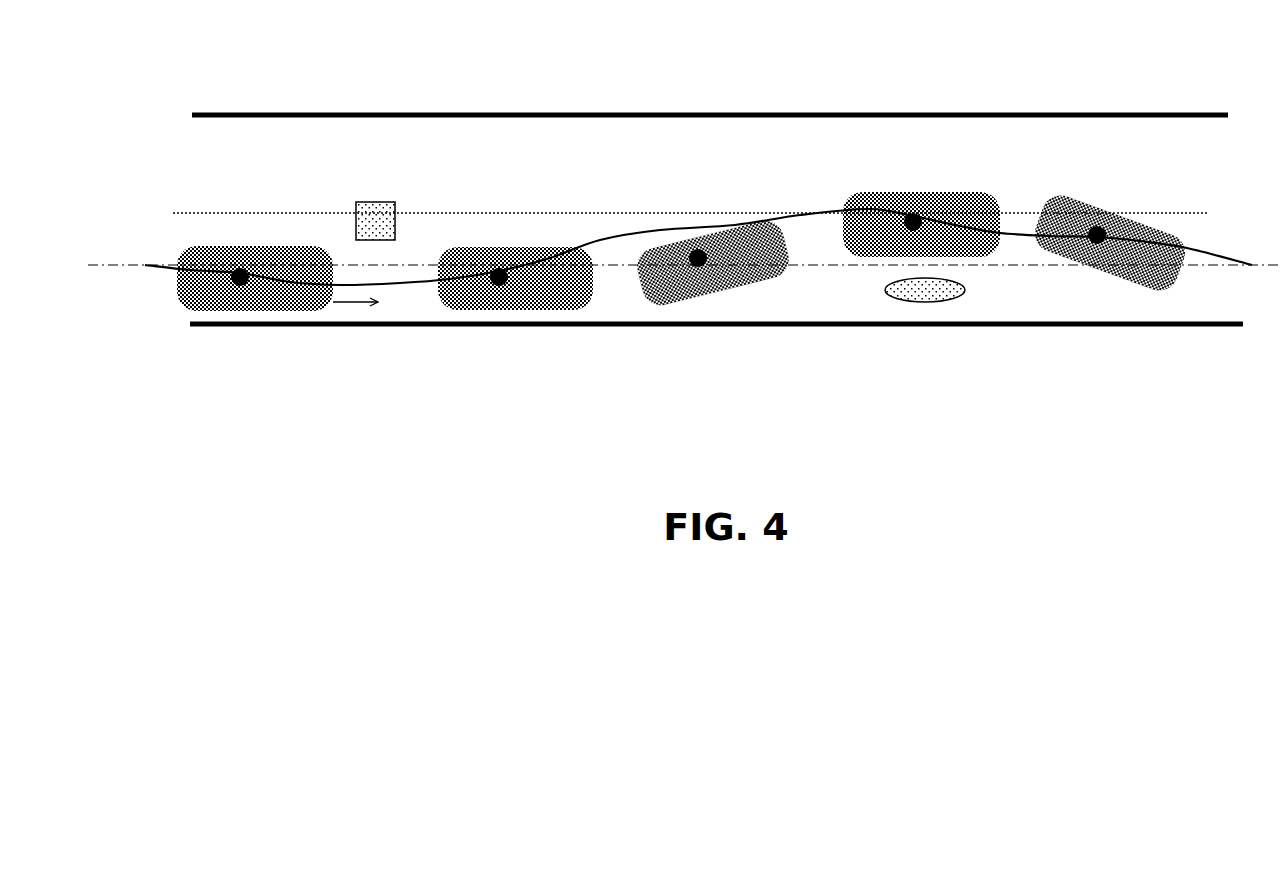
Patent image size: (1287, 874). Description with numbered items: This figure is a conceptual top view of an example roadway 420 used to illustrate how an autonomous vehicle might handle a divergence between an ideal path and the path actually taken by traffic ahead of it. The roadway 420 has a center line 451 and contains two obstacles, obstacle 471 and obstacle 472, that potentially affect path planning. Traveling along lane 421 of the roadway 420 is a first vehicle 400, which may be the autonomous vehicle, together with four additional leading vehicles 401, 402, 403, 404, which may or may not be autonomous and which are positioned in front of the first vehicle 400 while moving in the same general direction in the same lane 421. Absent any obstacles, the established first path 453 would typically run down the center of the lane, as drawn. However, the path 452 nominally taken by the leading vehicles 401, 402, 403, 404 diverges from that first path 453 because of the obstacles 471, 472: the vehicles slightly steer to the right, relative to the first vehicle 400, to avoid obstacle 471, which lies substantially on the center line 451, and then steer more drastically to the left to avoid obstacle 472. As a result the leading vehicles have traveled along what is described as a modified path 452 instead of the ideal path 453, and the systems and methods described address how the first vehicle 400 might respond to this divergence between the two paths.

The vehicle 400 is at (243, 285).
The vehicle 401 is at (502, 285).
The vehicle 402 is at (698, 268).
The vehicle 403 is at (910, 214).
The vehicle 404 is at (1093, 227).
The roadway 420 is at (446, 94).
The lane 421 is at (1213, 311).
The center line 451 is at (183, 213).
The modified path 452 is at (170, 270).
The first path 453 is at (125, 265).
The obstacle 471 is at (357, 202).
The obstacle 472 is at (897, 302).